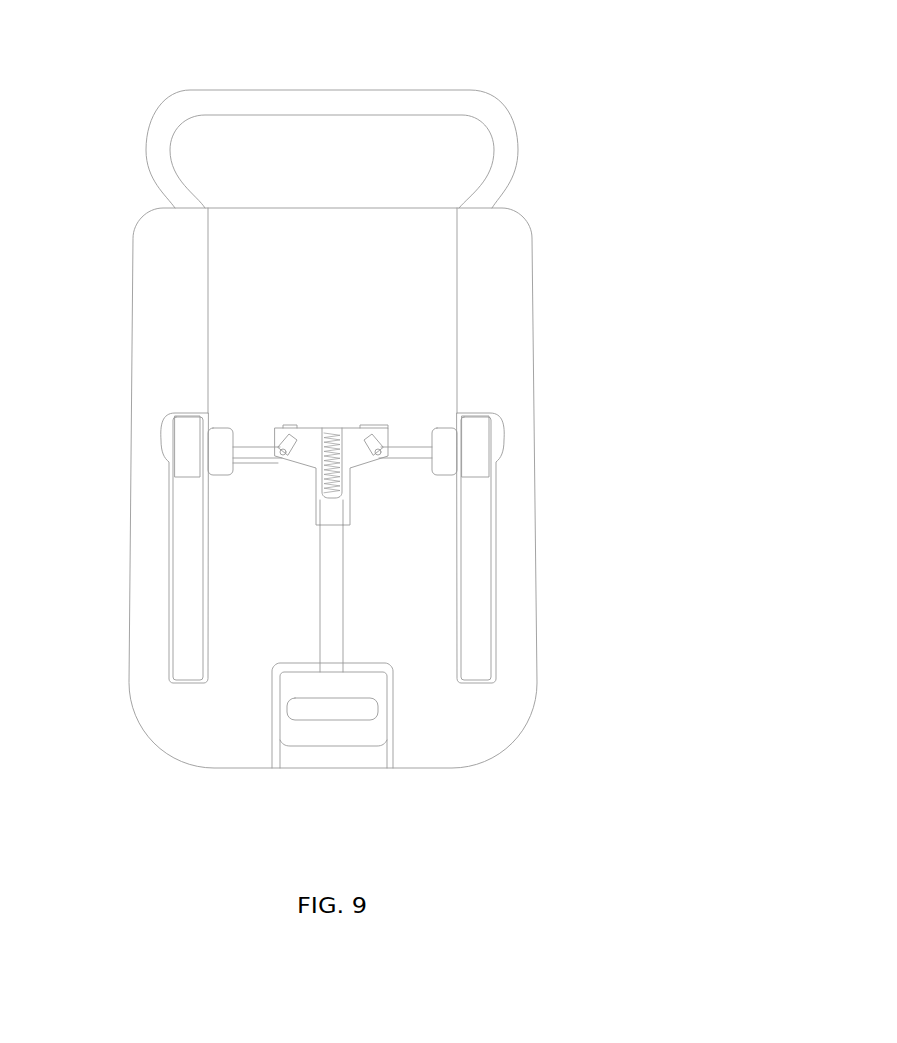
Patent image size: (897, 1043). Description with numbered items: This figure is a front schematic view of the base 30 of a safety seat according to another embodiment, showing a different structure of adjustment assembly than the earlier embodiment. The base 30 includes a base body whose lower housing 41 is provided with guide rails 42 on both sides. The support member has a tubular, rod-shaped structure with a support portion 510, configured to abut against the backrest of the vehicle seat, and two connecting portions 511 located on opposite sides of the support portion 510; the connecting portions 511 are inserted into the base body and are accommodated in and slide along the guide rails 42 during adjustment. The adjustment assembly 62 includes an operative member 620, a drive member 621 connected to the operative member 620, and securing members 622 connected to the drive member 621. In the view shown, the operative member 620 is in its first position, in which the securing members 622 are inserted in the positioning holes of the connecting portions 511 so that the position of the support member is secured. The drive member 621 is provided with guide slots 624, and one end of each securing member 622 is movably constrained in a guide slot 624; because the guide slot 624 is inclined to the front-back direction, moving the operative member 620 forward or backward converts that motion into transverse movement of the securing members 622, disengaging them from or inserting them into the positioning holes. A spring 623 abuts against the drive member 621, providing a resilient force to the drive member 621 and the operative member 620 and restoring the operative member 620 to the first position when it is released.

The base 30 is at (118, 97).
The support portion 510 is at (430, 110).
The connecting portion 511 is at (483, 443).
The lower housing 41 is at (465, 712).
The guide rail 42 is at (482, 590).
The adjustment assembly 62 is at (335, 582).
The operative member 620 is at (298, 728).
The drive member 621 is at (357, 445).
The securing member 622 is at (252, 450).
The spring 623 is at (335, 468).
The guide slot 624 is at (293, 442).